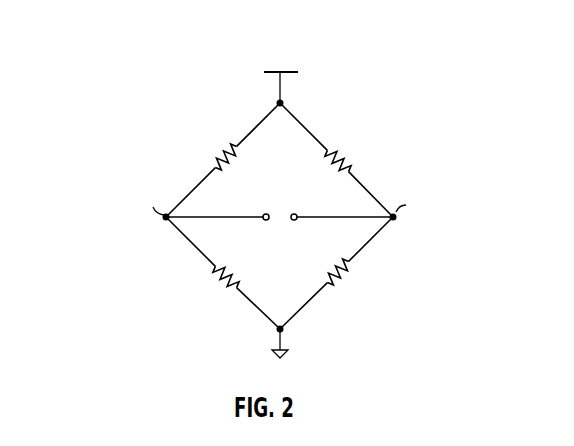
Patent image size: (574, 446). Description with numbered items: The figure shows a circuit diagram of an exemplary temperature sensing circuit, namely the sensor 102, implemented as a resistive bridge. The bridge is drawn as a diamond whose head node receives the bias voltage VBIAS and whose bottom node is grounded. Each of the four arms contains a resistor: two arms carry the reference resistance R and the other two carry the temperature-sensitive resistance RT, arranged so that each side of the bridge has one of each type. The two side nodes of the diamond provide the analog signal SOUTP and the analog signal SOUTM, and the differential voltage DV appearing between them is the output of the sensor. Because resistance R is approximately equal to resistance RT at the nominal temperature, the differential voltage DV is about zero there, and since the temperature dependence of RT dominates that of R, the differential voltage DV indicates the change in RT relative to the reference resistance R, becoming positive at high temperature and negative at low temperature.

The sensor 102 is at (247, 190).
The reference resistor resistance R is at (280, 217).
The temperature-sensitive resistor resistance RT is at (283, 221).
The bias voltage VBIAS is at (281, 75).
The differential voltage ΔV DV is at (279, 202).
The analog signal SOUT+ SOUTP is at (135, 208).
The analog signal SOUT- SOUTM is at (418, 204).